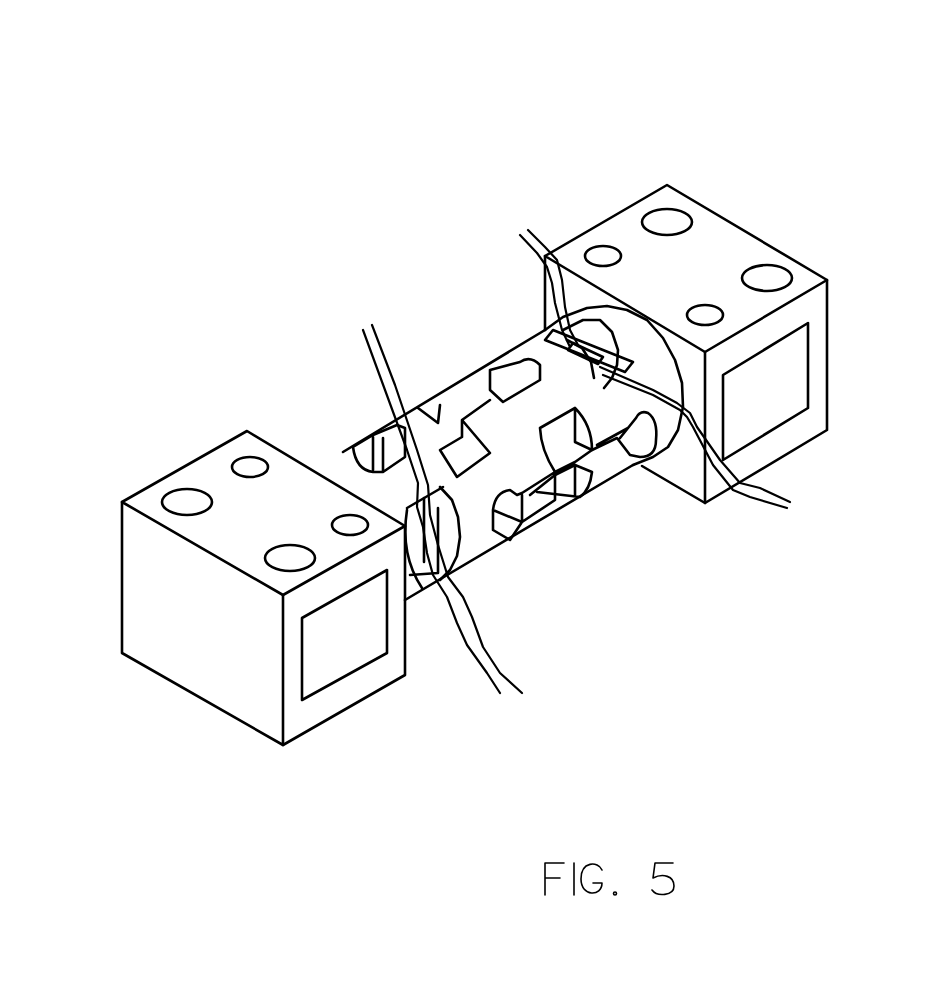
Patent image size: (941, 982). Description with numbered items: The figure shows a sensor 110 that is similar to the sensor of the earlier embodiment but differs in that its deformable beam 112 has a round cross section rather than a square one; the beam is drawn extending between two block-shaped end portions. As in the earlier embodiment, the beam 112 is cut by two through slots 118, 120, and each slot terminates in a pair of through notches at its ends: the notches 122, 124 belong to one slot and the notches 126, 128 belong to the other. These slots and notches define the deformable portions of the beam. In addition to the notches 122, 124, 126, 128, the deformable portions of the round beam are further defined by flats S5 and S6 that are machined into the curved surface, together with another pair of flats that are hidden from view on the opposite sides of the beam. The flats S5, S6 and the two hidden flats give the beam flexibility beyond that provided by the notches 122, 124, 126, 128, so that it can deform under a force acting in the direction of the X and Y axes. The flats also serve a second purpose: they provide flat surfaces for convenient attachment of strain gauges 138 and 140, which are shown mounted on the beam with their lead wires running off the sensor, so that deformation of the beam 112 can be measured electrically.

The sensor 110 is at (528, 403).
The deformable beam 112 is at (560, 496).
The through slot 118 is at (408, 324).
The through slot 120 is at (700, 526).
The through notch 122 is at (287, 373).
The through notch 124 is at (468, 275).
The through notch 126 is at (594, 602).
The through notch 128 is at (763, 508).
The strain gauge 138 is at (591, 216).
The strain gauge 140 is at (345, 395).
The flat S5 is at (629, 297).
The flat S6 is at (472, 554).